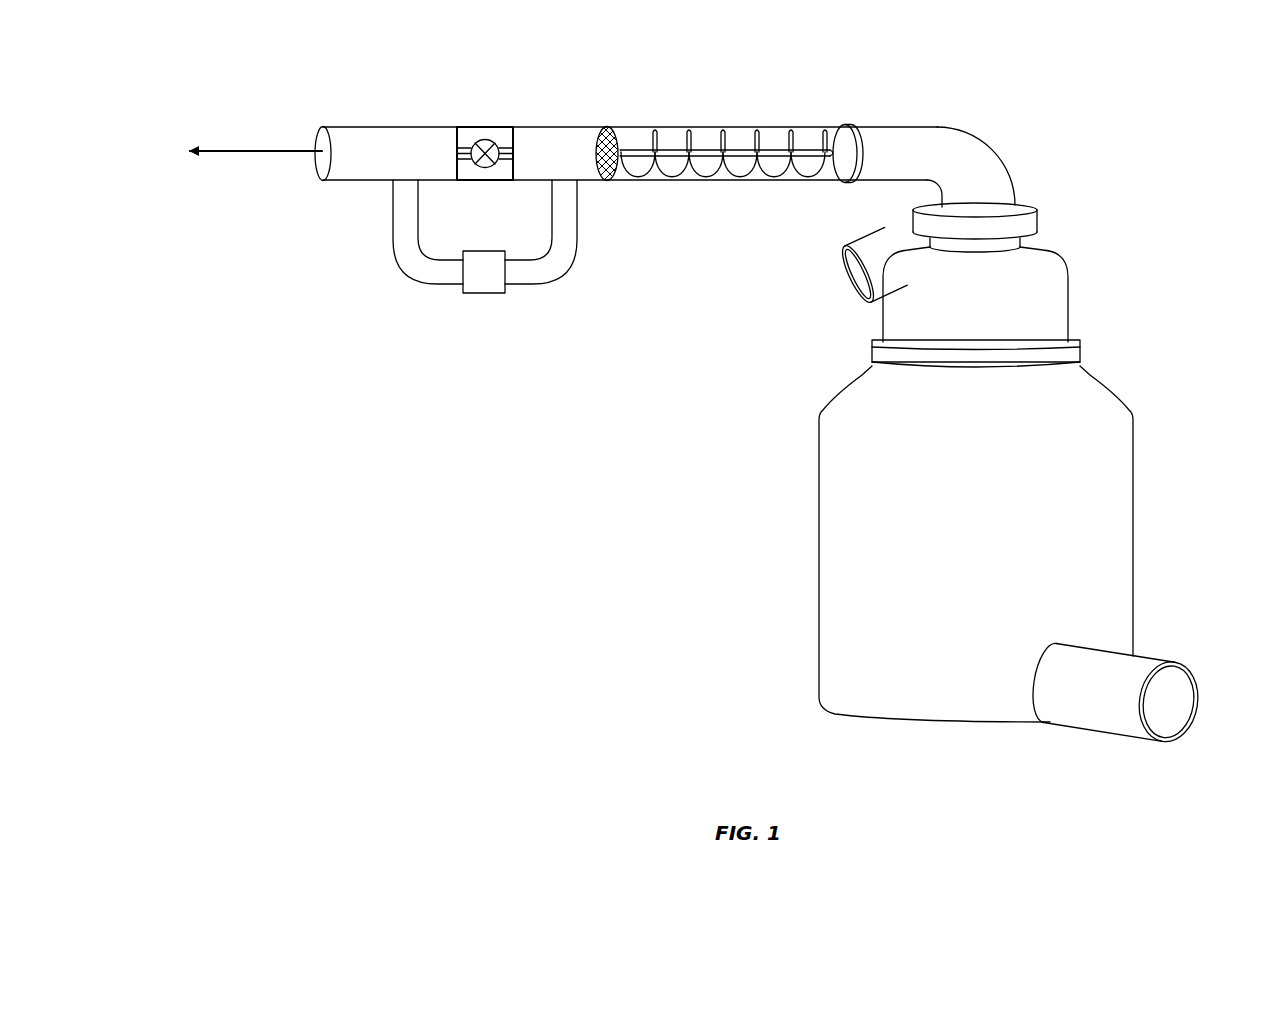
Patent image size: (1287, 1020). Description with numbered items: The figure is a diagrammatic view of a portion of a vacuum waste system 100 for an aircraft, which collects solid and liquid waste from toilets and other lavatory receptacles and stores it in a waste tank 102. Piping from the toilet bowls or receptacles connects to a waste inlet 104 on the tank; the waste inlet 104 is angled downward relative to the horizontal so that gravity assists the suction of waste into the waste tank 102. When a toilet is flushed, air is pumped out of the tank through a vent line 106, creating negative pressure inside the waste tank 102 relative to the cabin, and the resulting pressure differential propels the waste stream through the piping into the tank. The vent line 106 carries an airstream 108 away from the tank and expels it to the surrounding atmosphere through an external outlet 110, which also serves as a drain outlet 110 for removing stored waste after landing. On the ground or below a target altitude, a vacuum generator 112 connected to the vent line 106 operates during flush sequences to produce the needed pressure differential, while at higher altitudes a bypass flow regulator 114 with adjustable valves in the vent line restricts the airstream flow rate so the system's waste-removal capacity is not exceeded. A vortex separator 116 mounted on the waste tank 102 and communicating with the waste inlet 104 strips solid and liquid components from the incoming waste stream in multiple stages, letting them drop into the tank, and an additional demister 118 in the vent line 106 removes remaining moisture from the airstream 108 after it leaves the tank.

The vacuum waste system 100 is at (198, 91).
The waste tank 102 is at (850, 543).
The waste inlet 104 is at (858, 280).
The vent line 106 is at (968, 133).
The airstream 108 is at (257, 152).
The external outlet 110 is at (322, 165).
The vacuum generator 112 is at (478, 278).
The bypass flow regulator 114 is at (485, 127).
The vortex separator 116 is at (1058, 312).
The demister 118 is at (745, 201).